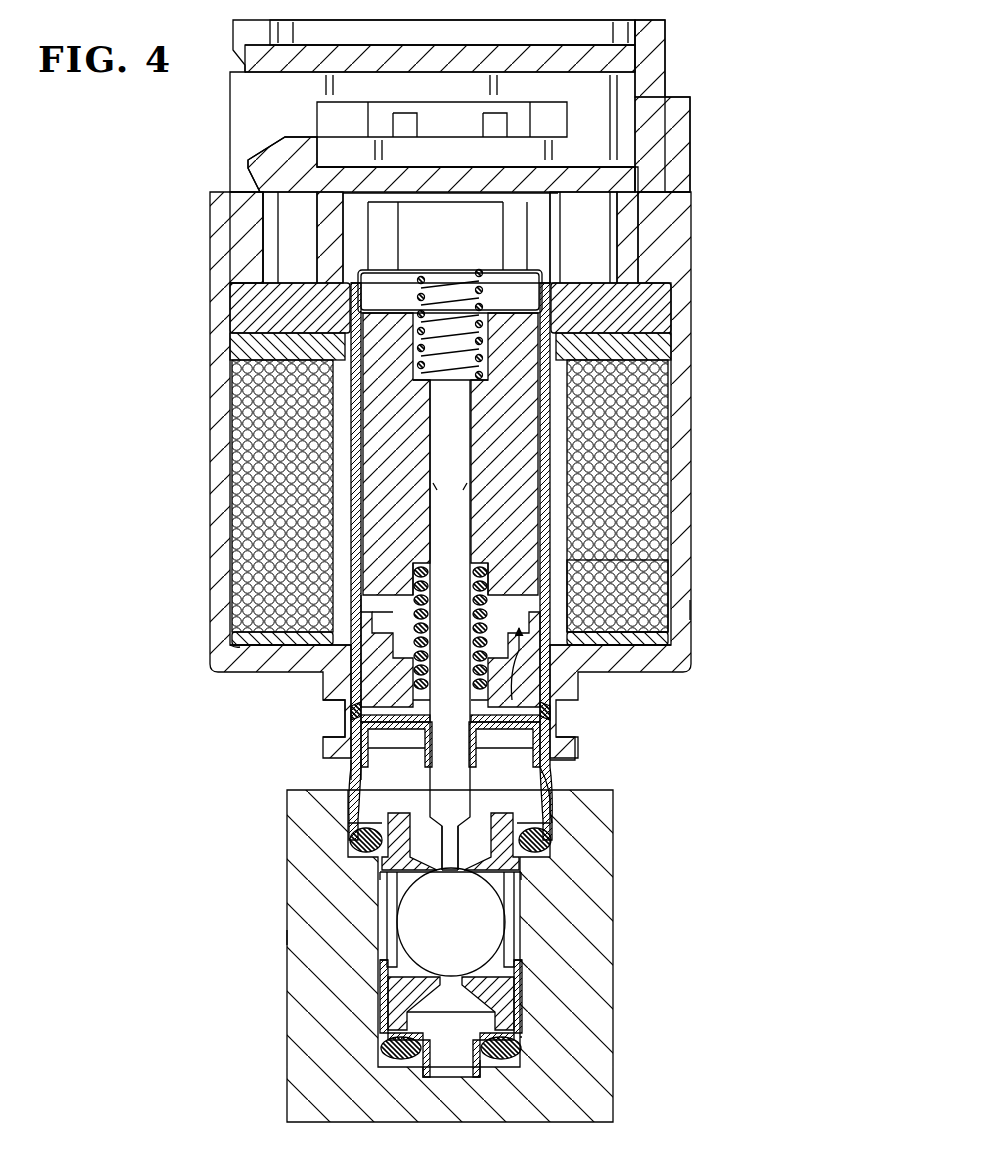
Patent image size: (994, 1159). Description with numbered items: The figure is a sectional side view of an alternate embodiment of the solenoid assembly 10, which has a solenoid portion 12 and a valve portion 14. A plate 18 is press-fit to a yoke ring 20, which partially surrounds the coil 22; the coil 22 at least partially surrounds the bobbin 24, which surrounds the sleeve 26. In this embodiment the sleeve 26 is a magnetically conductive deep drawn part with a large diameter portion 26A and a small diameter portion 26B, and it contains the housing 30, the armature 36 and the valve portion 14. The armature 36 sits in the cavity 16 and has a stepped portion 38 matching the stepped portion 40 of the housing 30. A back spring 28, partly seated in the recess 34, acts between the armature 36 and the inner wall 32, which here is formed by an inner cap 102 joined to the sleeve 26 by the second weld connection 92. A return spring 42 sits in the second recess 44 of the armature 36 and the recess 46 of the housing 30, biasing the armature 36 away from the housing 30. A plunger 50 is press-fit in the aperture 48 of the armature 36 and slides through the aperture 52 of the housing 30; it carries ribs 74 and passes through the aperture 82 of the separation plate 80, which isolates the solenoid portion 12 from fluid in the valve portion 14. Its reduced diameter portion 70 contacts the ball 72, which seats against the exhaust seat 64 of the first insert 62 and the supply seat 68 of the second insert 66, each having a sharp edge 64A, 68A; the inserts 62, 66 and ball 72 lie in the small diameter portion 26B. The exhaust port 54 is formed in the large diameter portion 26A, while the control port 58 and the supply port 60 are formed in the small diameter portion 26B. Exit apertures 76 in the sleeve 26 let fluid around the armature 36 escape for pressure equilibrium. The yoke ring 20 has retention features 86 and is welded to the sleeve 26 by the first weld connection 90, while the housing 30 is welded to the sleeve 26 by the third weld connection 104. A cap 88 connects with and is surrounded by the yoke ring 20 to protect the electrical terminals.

The solenoid assembly 10 is at (190, 933).
The solenoid portion 12 is at (722, 605).
The valve portion 14 is at (670, 986).
The cavity 16 is at (560, 316).
The plate 18 is at (340, 326).
The yoke ring 20 is at (683, 399).
The coil 22 is at (640, 520).
The bobbin 24 is at (640, 347).
The sleeve 26 is at (352, 466).
The large diameter portion 26A is at (548, 370).
The small diameter portion 26B is at (387, 993).
The back spring 28 is at (420, 303).
The housing 30 is at (393, 690).
The inner wall 32 is at (548, 282).
The recess 34 is at (445, 302).
The armature 36 is at (513, 467).
The stepped portion 38 is at (505, 645).
The stepped portion 40 is at (382, 625).
The return spring 42 is at (498, 585).
The second recess 44 is at (408, 568).
The recess 46 is at (400, 650).
The aperture 48 is at (437, 456).
The plunger 50 is at (553, 838).
The aperture 52 is at (555, 722).
The exhaust port 54 is at (550, 812).
The control port 58 is at (395, 955).
The supply port 60 is at (430, 1060).
The first insert 62 is at (512, 858).
The exhaust seat 64 is at (500, 877).
The sharp edge 64A is at (395, 895).
The second insert 66 is at (498, 1005).
The supply seat 68 is at (383, 1042).
The sharp edge 68A is at (522, 1037).
The reduced diameter portion 70 is at (450, 868).
The ball 72 is at (422, 935).
The ribs 74 is at (545, 740).
The exit apertures 76 is at (640, 590).
The separation plate 80 is at (580, 758).
The aperture 82 is at (355, 764).
The retention features 86 is at (310, 722).
The cap 88 is at (598, 120).
The first weld connection 90 is at (555, 712).
The second weld connection 92 is at (345, 262).
The inner cap 102 is at (548, 266).
The third weld connection 104 is at (560, 628).